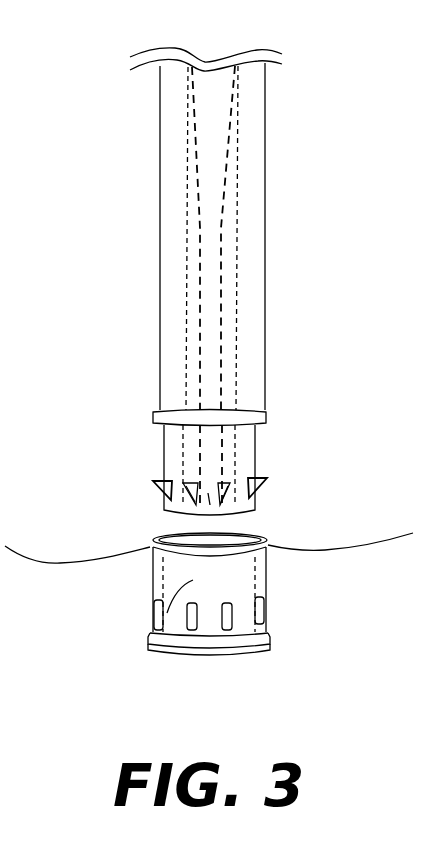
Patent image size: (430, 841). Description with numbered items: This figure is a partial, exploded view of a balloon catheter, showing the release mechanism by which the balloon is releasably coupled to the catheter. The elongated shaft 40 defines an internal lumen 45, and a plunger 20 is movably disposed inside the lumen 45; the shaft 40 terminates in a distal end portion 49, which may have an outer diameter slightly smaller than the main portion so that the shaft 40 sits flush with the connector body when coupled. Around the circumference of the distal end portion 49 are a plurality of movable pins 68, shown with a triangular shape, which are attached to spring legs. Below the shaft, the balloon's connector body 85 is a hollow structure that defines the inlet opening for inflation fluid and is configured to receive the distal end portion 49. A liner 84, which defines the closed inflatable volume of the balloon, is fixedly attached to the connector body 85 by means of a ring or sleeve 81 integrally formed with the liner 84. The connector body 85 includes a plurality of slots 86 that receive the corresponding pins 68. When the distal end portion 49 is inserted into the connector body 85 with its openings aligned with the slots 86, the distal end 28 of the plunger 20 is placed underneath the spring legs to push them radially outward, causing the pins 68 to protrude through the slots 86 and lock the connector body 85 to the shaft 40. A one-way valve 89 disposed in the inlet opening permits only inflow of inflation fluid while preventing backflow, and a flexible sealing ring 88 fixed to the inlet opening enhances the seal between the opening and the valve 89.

The plunger 20 is at (208, 278).
The distal end 28 is at (210, 505).
The elongated shaft 40 is at (245, 127).
The internal lumen 45 is at (227, 197).
The distal end portion 49 is at (173, 460).
The movable pins 68 is at (253, 483).
The ring or sleeve 81 is at (150, 552).
The liner 84 is at (378, 548).
The connector body 85 is at (150, 633).
The slots 86 is at (257, 610).
The flexible sealing ring 88 is at (217, 636).
The one-way valve 89 is at (247, 648).